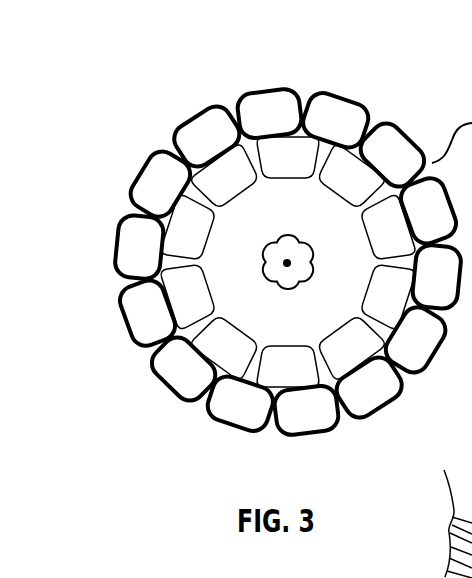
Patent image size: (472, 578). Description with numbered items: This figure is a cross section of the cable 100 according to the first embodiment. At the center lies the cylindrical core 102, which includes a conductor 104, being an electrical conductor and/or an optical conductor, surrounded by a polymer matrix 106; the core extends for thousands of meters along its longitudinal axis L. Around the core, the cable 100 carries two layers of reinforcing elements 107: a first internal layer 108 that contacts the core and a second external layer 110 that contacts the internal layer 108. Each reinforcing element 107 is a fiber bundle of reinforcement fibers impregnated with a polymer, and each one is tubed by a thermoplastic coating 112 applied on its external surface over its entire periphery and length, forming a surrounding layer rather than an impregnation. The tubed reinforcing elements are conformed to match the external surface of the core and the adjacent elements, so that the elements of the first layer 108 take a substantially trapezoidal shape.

The cable 100 is at (240, 258).
The core 102 is at (283, 318).
The conductor 104 is at (293, 248).
The polymer matrix 106 is at (317, 315).
The reinforcing elements 107 is at (200, 120).
The first internal layer 108 is at (157, 278).
The second external layer 110 is at (258, 263).
The coating 112 is at (117, 232).